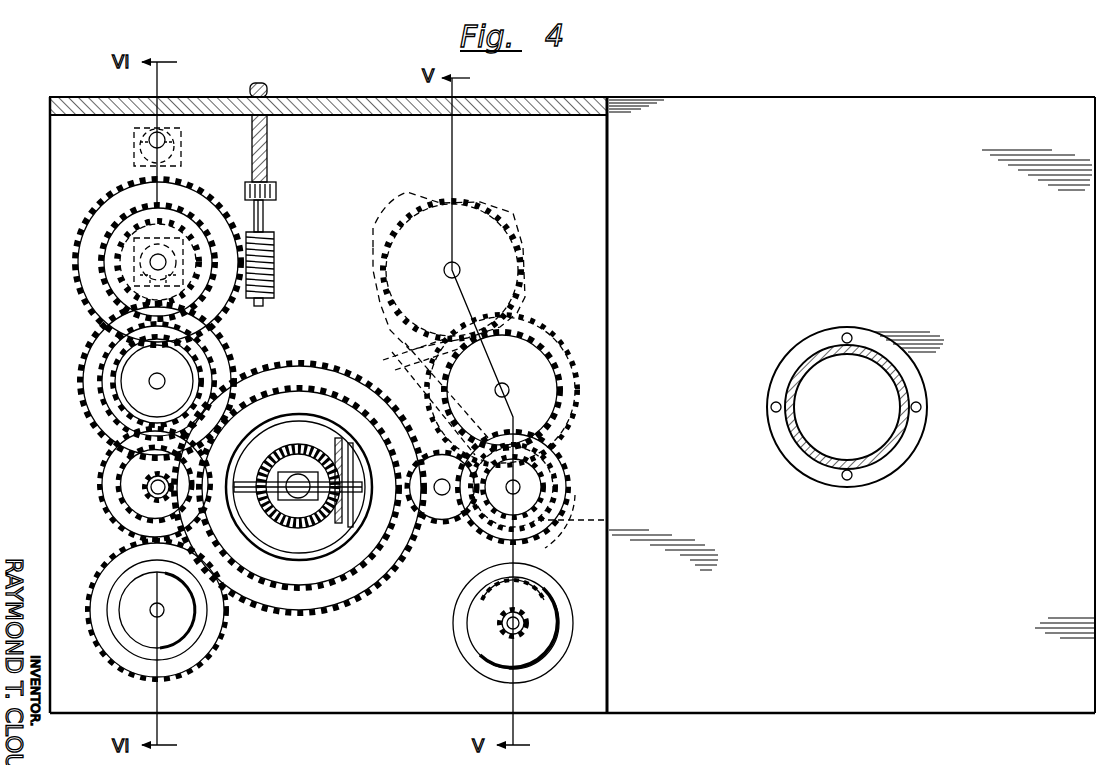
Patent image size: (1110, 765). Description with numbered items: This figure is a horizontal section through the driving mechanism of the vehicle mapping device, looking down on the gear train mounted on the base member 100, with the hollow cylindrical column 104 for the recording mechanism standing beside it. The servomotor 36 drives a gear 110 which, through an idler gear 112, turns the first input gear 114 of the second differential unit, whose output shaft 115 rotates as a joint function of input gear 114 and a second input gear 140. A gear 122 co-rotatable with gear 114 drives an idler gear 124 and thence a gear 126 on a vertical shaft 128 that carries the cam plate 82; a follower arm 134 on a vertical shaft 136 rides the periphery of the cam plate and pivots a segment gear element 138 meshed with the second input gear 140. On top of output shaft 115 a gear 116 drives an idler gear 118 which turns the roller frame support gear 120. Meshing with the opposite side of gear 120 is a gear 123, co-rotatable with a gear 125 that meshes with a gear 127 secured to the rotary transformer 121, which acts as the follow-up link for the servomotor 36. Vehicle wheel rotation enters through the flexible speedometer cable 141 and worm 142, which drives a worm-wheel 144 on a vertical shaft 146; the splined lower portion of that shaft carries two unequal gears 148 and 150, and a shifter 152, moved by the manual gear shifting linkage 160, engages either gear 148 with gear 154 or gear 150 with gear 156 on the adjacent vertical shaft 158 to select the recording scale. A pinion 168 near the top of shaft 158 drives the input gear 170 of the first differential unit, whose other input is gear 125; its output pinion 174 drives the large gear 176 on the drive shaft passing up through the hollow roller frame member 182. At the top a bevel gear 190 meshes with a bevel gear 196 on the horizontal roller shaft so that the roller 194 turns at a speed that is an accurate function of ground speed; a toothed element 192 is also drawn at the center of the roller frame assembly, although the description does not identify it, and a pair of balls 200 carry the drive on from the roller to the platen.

The servomotor 36 is at (574, 618).
The cam plate 82 is at (530, 312).
The base member 100 is at (1094, 572).
The upstanding column 104 is at (888, 448).
The gear 110 is at (535, 612).
The idler gear 112 is at (545, 560).
The first input gear 114 is at (576, 520).
The output shaft 115 is at (520, 488).
The gear 116 is at (528, 490).
The idler gear 118 is at (440, 528).
The roller frame support gear 120 is at (343, 578).
The rotary transformer 121 is at (205, 648).
The gear 122 is at (548, 448).
The gear 123 is at (130, 510).
The idler gear 124 is at (570, 375).
The gear 125 is at (97, 495).
The gear 126 is at (533, 272).
The gear 127 is at (98, 607).
The vertical shaft 128 is at (460, 266).
The follower arm 134 is at (388, 326).
The vertical shaft 136 is at (392, 366).
The segment gear element 138 is at (493, 393).
The second input gear 140 is at (607, 520).
The flexible speedometer cable 141 is at (268, 150).
The worm 142 is at (276, 236).
The worm-wheel 144 is at (190, 186).
The vertical shaft 146 is at (108, 318).
The gear 148 is at (102, 200).
The gear 150 is at (100, 222).
The shifter 152 is at (102, 324).
The gear 154 is at (80, 374).
The gear 156 is at (80, 400).
The vertical shaft 158 is at (165, 382).
The gear shifting linkage 160 is at (130, 155).
The pinion 168 is at (120, 367).
The input gear 170 is at (100, 455).
The pinion 174 is at (98, 470).
The large gear 176 is at (305, 612).
The roller frame member 182 is at (299, 484).
The bevel gear 190 is at (303, 442).
The ratchet wheel 192 is at (302, 450).
The roller 194 is at (285, 500).
The bevel gear 196 is at (340, 450).
The balls 200 is at (313, 500).